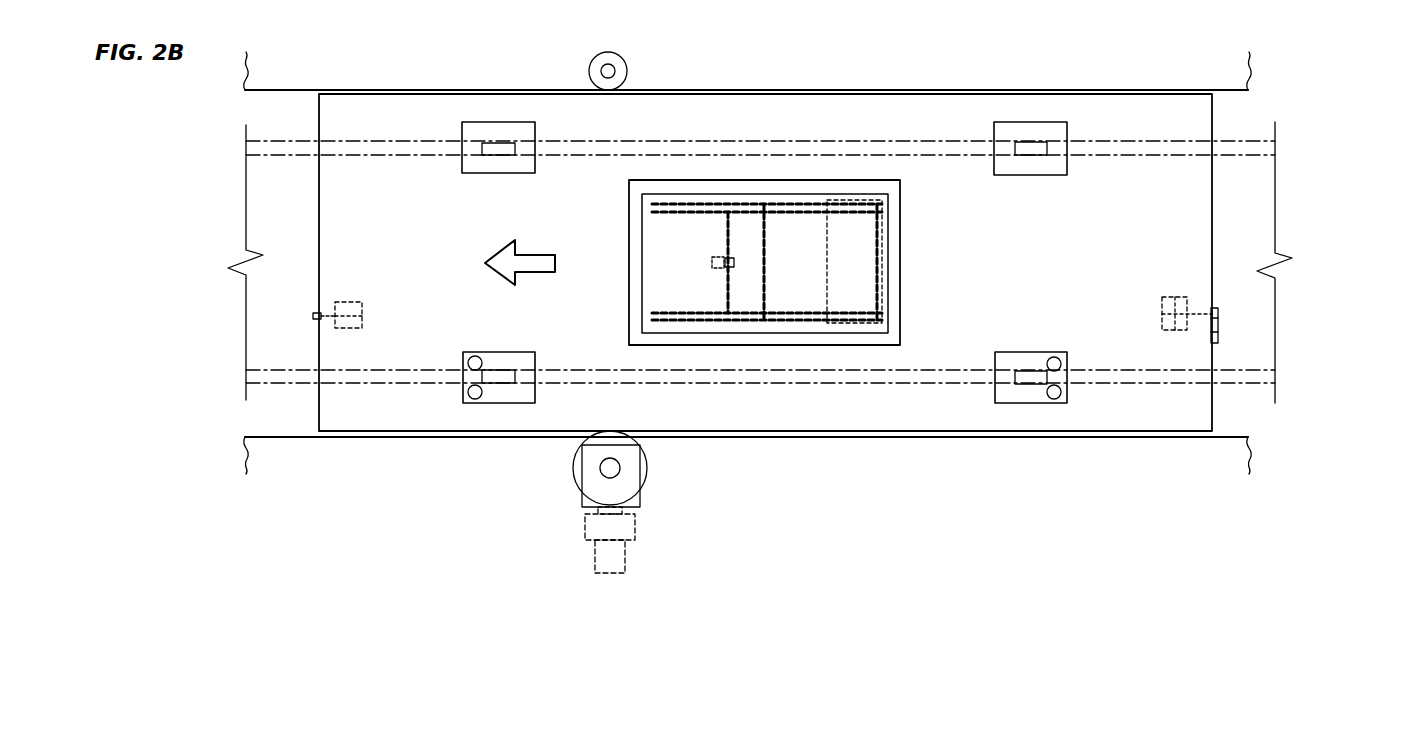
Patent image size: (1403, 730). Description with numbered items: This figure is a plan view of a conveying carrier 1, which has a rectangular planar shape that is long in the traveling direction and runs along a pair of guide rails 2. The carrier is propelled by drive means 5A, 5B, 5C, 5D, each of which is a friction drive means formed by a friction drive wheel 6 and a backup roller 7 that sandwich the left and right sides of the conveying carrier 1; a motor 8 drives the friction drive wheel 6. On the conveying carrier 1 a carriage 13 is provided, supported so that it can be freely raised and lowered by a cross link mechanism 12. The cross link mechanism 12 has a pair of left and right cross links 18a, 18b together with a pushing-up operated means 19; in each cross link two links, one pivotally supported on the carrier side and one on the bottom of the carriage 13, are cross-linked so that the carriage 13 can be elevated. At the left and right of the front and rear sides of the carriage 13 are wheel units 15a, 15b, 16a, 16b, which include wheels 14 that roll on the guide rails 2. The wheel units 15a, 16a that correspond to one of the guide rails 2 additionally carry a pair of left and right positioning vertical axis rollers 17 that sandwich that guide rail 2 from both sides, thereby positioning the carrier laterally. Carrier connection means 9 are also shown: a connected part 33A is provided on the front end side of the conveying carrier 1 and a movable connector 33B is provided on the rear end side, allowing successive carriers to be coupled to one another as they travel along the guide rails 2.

The conveying carrier 1 is at (767, 90).
The guide rails 2 is at (258, 148).
The drive means 5A is at (525, 540).
The drive means 5B is at (525, 540).
The drive means 5C is at (525, 540).
The drive means 5D is at (586, 531).
The friction drive wheel 6 is at (646, 468).
The backup roller 7 is at (608, 52).
The motor 8 is at (618, 560).
The carrier connection means 9 is at (737, 320).
The connected part 33A is at (310, 317).
The movable connector 33B is at (1222, 319).
The cross link mechanism 12 is at (800, 333).
The carriage 13 is at (830, 248).
The wheels 14 is at (490, 145).
The wheel unit 15a is at (498, 405).
The wheel unit 15b is at (499, 120).
The wheel unit 16a is at (1032, 406).
The wheel unit 16b is at (1033, 120).
The positioning vertical axis rollers 17 is at (468, 392).
The cross link 18a is at (700, 325).
The cross link 18b is at (700, 200).
The pushing-up operated means 19 is at (706, 262).